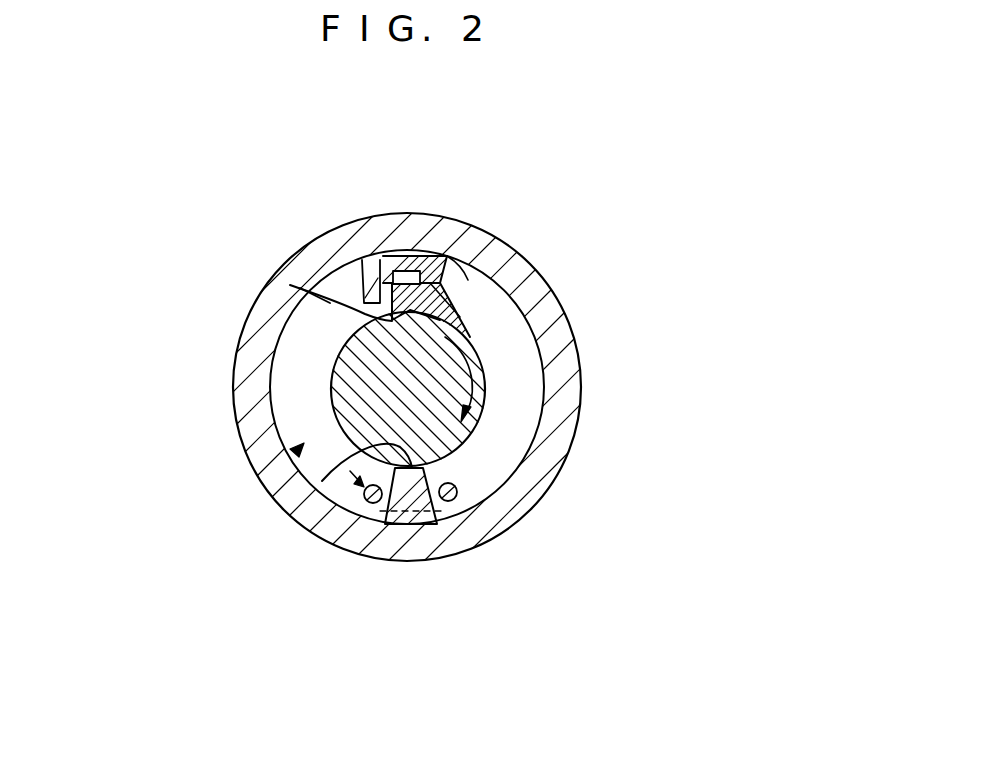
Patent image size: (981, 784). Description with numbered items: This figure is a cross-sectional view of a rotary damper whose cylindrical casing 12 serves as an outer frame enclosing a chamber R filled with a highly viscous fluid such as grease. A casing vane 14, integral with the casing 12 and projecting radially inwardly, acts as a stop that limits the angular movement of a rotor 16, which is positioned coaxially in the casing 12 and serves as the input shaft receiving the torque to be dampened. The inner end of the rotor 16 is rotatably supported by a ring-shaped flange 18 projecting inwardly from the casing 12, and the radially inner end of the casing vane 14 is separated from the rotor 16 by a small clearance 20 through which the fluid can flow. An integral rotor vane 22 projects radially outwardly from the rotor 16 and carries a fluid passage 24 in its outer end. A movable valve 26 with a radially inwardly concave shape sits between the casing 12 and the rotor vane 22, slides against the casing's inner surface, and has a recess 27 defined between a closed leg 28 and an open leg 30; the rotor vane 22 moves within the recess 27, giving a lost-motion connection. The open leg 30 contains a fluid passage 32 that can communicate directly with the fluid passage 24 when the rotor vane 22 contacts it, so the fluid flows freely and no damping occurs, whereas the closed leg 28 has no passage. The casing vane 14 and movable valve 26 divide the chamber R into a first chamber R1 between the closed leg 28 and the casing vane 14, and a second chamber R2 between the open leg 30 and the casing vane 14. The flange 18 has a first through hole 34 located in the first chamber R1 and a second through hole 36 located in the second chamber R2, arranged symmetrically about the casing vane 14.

The cylindrical casing 12 is at (573, 377).
The casing vane 14 is at (401, 500).
The rotor 16 is at (352, 410).
The ring-shaped flange 18 is at (510, 336).
The clearance 20 is at (348, 503).
The rotor vane 22 is at (290, 285).
The fluid passage 24 is at (433, 253).
The movable valve 26 is at (394, 270).
The recess 27 is at (368, 272).
The closed leg 28 is at (473, 283).
The open leg 30 is at (345, 293).
The fluid passage 32 is at (325, 318).
The first through hole 34 is at (458, 499).
The second through hole 36 is at (369, 504).
The chamber R is at (297, 447).
The first chamber R1 is at (518, 444).
The second chamber R2 is at (305, 349).